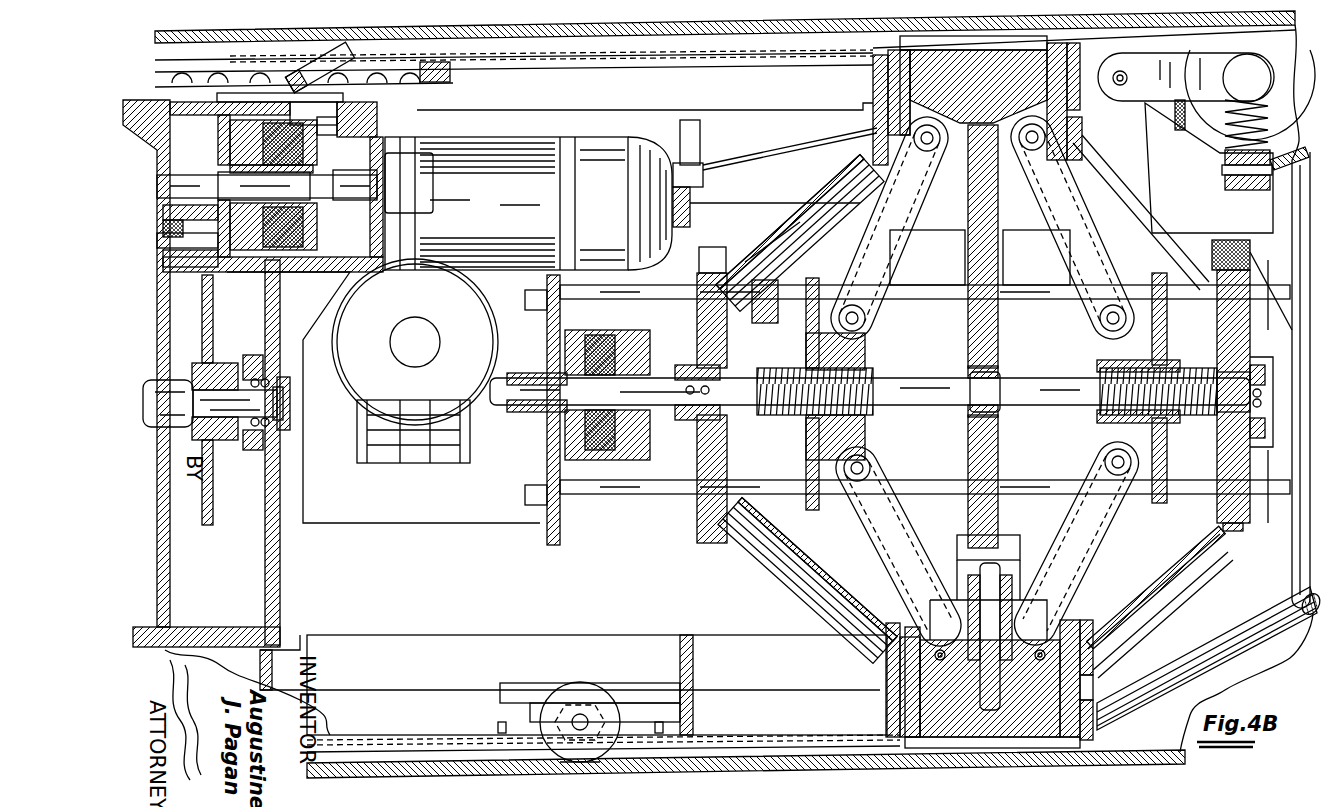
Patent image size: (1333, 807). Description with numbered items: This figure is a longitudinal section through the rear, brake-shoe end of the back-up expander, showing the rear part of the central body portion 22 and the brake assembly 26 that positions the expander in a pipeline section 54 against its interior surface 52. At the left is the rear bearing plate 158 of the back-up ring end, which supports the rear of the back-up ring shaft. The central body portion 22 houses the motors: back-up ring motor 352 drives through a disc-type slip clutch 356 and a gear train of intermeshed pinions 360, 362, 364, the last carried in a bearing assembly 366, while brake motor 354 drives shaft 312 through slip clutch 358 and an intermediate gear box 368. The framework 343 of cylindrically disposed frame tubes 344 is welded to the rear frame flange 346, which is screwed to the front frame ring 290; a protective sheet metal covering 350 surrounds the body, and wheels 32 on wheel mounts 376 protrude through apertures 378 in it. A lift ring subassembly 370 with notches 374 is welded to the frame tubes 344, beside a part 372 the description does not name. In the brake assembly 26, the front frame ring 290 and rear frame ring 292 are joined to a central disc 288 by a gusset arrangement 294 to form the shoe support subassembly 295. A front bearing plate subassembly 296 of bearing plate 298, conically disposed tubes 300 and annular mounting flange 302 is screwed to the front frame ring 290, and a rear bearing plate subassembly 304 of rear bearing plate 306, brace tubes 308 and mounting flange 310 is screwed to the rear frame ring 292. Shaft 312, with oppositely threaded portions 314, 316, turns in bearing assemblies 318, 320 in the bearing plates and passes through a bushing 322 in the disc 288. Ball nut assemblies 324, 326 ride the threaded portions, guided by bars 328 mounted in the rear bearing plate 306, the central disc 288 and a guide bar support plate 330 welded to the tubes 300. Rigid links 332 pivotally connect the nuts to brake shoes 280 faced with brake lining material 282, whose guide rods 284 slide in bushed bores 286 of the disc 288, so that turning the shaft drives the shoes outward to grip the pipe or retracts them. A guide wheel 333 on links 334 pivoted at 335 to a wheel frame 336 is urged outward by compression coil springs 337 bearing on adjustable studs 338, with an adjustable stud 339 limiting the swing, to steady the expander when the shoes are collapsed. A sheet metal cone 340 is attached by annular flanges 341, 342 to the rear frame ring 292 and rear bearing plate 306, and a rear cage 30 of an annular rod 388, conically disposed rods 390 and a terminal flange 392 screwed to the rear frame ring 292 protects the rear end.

The central body portion 22 is at (643, 44).
The brake assembly 26 is at (954, 42).
The rear cage 30 is at (1278, 640).
The wheels 32 is at (568, 765).
The interior surface 52 is at (724, 36).
The pipeline section 54 is at (806, 36).
The rear bearing plate 158 is at (148, 102).
The shoes 280 is at (1036, 44).
The brake lining material 282 is at (1005, 18).
The guide rods 284 is at (1000, 686).
The bushed bores 286 is at (1002, 570).
The central disc 288 is at (998, 433).
The front frame ring 290 is at (883, 48).
The rear frame ring 292 is at (1065, 46).
The gusset arrangement 294 is at (935, 245).
The shoe support subassembly 295 is at (1045, 750).
The front bearing plate subassembly 296 is at (788, 218).
The bearing plate 298 is at (706, 262).
The conically disposed tubes 300 is at (836, 186).
The annular mounting flange 302 is at (855, 121).
The rear bearing plate subassembly 304 is at (1250, 265).
The rear bearing plate 306 is at (1250, 503).
The brace tubes 308 is at (1140, 232).
The mounting flange 310 is at (1084, 130).
The shaft 312 is at (1022, 385).
The threaded portion 314 is at (908, 415).
The threaded portion 316 is at (1200, 412).
The bearing assembly 318 is at (692, 364).
The bearing assembly 320 is at (1220, 363).
The bushing 322 is at (967, 375).
The ball nut assembly 324 is at (815, 245).
The ball nut assembly 326 is at (1167, 450).
The bars 328 is at (1010, 298).
The guide bar support plate 330 is at (870, 455).
The rigid links 332 is at (880, 215).
The guide wheel 333 is at (1254, 47).
The links 334 is at (1195, 52).
The pivot 335 is at (1125, 72).
The wheel frame 336 is at (1266, 221).
The compression coil springs 337 is at (1243, 100).
The adjustable studs 338 is at (1224, 165).
The adjustable stud 339 is at (1180, 130).
The protective sheet metal cone 340 is at (1202, 571).
The annular flange 341 is at (1092, 655).
The annular flange 342 is at (1236, 540).
The framework 343 is at (532, 630).
The frame tubes 344 is at (512, 106).
The rear frame flange 346 is at (902, 75).
The protective cylindrical sheet metal covering 350 is at (745, 55).
The back-up ring motor 352 is at (610, 193).
The brake motor 354 is at (430, 307).
The slip clutch 356 is at (323, 220).
The slip clutch 358 is at (625, 455).
The pinion 360 is at (202, 160).
The pinion 362 is at (160, 275).
The pinion 364 is at (235, 362).
The bearing assembly 366 is at (258, 455).
The intermediate gear box 368 is at (440, 462).
The lift ring subassembly 370 is at (452, 65).
The roller 372 is at (352, 58).
The notches 374 is at (262, 78).
The wheel mounts 376 is at (538, 686).
The apertures 378 is at (618, 762).
The annularly configured rod 388 is at (1293, 334).
The conically disposed rods 390 is at (1290, 145).
The annular terminal flange 392 is at (1080, 55).